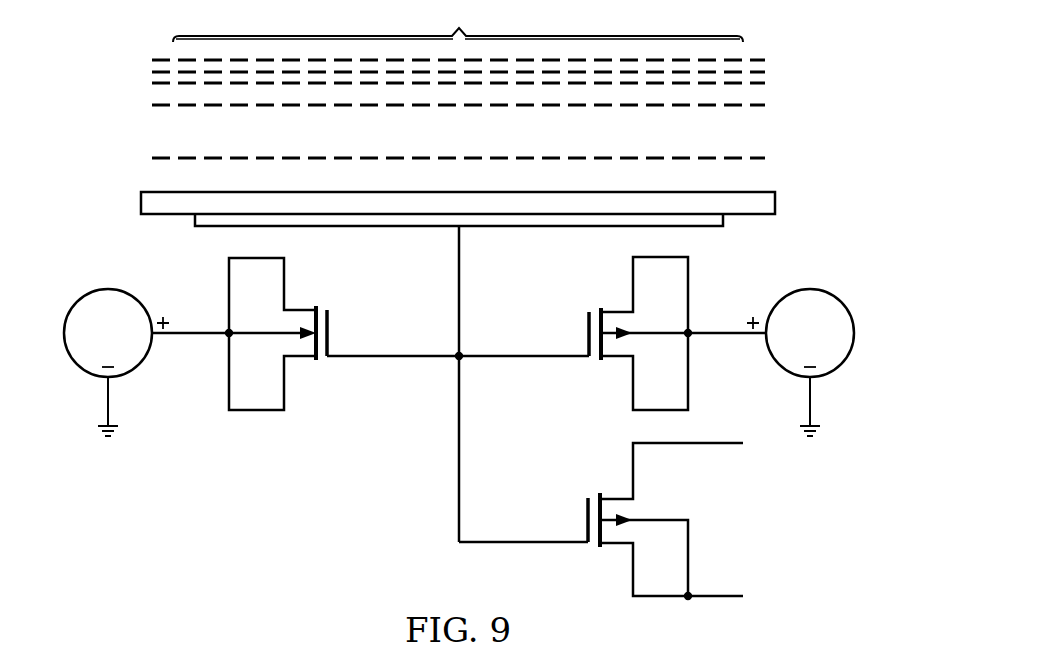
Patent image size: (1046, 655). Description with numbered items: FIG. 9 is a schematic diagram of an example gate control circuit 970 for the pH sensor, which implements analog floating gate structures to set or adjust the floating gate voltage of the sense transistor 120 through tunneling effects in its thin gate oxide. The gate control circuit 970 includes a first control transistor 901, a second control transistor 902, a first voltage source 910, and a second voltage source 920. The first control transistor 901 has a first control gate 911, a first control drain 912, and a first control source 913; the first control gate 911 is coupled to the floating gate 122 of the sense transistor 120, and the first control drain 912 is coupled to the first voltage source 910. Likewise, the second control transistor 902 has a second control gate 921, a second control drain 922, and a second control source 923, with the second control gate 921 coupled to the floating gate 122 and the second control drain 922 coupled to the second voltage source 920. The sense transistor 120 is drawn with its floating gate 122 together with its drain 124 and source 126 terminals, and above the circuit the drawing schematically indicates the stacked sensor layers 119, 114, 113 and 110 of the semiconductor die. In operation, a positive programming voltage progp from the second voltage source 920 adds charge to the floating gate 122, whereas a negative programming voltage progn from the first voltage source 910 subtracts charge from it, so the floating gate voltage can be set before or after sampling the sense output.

The memory array layers 119 is at (458, 53).
The dielectric layer 114 is at (440, 144).
The substrate / bottom electrode 113 is at (777, 201).
The bottom electrode contact 110 is at (427, 227).
The gate control circuit 970 is at (62, 244).
The first voltage source 910 is at (77, 365).
The second voltage source 920 is at (840, 363).
The first control transistor 901 is at (368, 378).
The first control gate 911 is at (350, 354).
The first control drain 912 is at (284, 284).
The first control source 913 is at (284, 383).
The second control transistor 902 is at (553, 378).
The second control gate 921 is at (568, 354).
The second control drain 922 is at (633, 284).
The second control source 923 is at (633, 383).
The sense transistor 120 is at (553, 565).
The floating gate 122 is at (569, 541).
The drain of select transistor 124 is at (633, 470).
The source of select transistor 126 is at (633, 568).